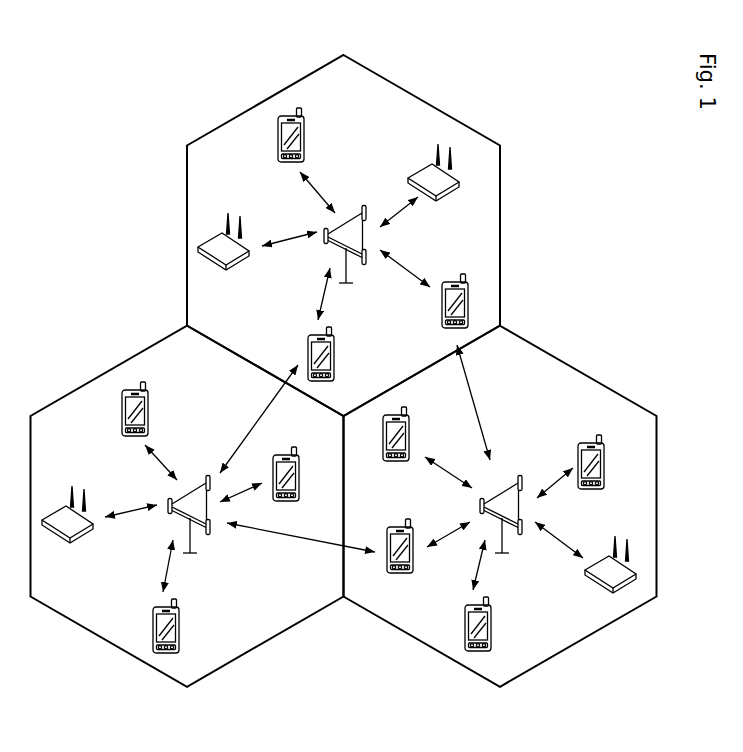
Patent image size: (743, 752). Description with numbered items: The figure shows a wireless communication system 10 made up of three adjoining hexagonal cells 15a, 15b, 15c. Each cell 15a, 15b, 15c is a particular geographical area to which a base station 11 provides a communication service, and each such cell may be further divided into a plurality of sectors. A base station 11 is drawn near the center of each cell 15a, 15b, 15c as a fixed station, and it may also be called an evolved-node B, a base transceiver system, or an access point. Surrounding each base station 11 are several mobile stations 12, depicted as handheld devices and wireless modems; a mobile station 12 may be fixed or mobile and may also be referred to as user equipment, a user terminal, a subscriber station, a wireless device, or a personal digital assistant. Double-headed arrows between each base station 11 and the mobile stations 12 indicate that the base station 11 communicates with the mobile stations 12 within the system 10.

The wireless communication system 10 is at (344, 371).
The base station 11 is at (363, 209).
The mobile station 12 is at (305, 141).
The cell 15a is at (500, 223).
The cell 15b is at (598, 381).
The cell 15c is at (90, 381).